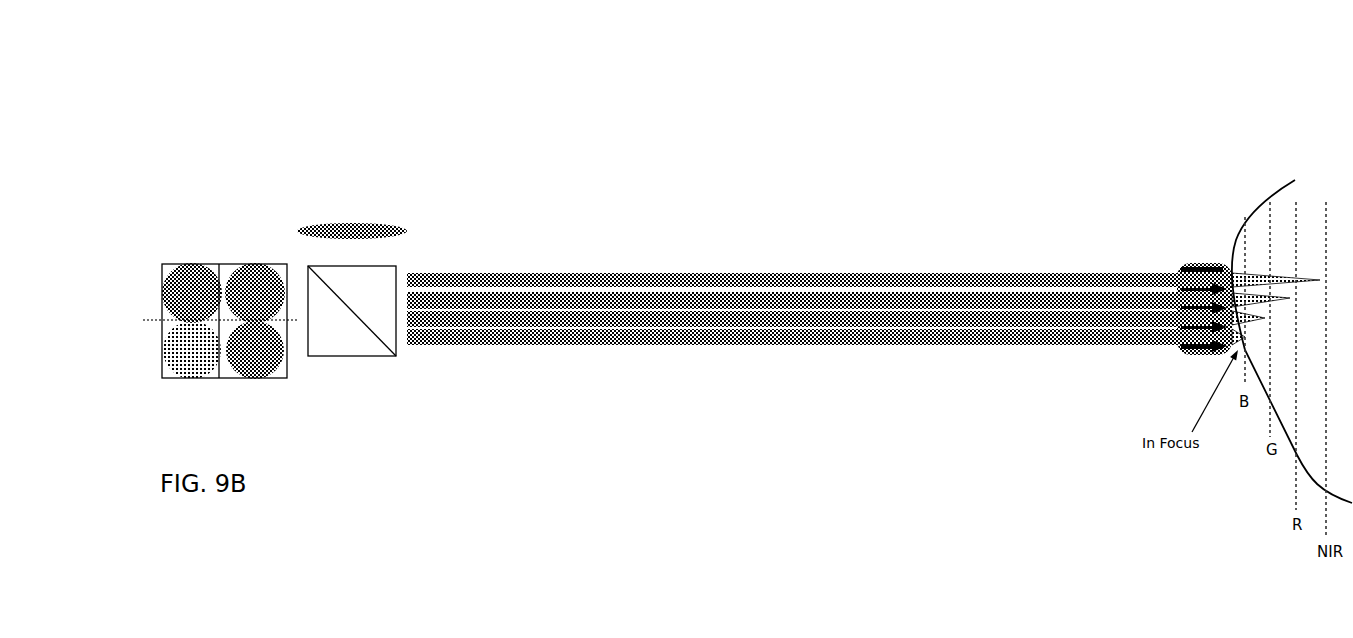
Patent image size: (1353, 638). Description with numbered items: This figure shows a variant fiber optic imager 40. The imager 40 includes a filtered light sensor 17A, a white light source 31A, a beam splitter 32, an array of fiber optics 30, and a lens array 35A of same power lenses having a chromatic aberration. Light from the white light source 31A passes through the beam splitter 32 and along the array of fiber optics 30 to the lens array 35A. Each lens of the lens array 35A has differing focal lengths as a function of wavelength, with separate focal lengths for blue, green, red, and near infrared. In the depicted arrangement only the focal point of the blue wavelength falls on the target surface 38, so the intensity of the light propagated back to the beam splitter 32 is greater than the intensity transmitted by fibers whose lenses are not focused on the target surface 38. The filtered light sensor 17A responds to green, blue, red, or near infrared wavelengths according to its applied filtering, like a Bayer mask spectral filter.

The filtered light sensor 17A is at (163, 262).
The white light source 31A is at (413, 230).
The beam splitter 32 is at (342, 365).
The array of fiber optics 30 is at (692, 348).
The lens array 35A is at (1183, 262).
The target surface 38 is at (1268, 200).
The imager 40 is at (556, 89).